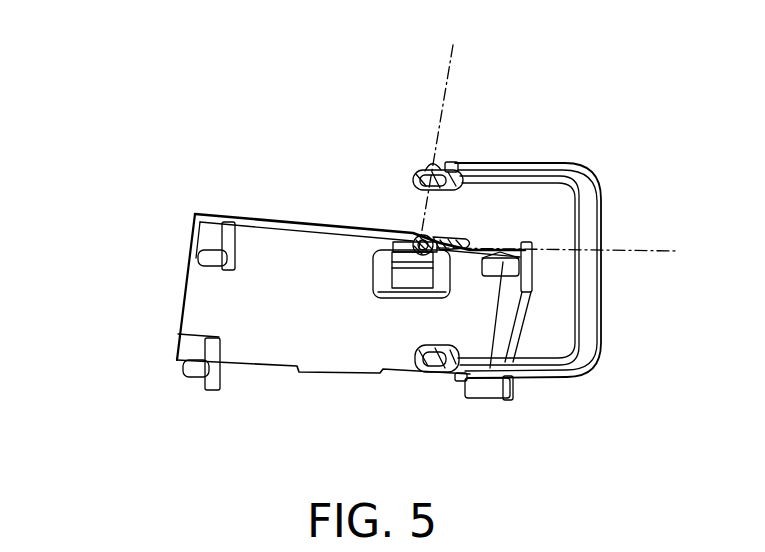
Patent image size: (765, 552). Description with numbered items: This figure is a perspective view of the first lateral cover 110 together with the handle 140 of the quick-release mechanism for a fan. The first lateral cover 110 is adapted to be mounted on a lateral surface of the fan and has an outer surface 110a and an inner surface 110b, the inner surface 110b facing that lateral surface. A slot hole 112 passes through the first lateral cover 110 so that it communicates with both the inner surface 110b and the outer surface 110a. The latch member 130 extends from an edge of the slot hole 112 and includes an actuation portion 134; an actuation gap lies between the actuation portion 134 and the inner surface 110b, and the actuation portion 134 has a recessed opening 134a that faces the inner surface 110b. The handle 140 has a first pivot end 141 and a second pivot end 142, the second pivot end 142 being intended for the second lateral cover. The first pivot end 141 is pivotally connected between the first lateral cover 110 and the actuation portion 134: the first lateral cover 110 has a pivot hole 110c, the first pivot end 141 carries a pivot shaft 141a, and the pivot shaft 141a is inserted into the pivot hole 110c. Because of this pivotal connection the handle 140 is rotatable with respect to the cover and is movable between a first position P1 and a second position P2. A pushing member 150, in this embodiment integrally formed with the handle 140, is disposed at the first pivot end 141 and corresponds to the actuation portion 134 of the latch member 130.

The first lateral cover 110 is at (322, 224).
The outer surface 110a is at (239, 208).
The inner surface 110b is at (250, 300).
The pivot hole 110c is at (417, 237).
The slot hole 112 is at (381, 280).
The latch member 130 is at (410, 289).
The actuation portion 134 is at (393, 252).
The recessed opening 134a is at (460, 236).
The handle 140 is at (594, 226).
The first pivot end 141 is at (458, 168).
The pivot shaft 141a is at (431, 160).
The second pivot end 142 is at (452, 380).
The pushing member 150 is at (460, 161).
The first position P1 is at (574, 253).
The second position P2 is at (444, 133).